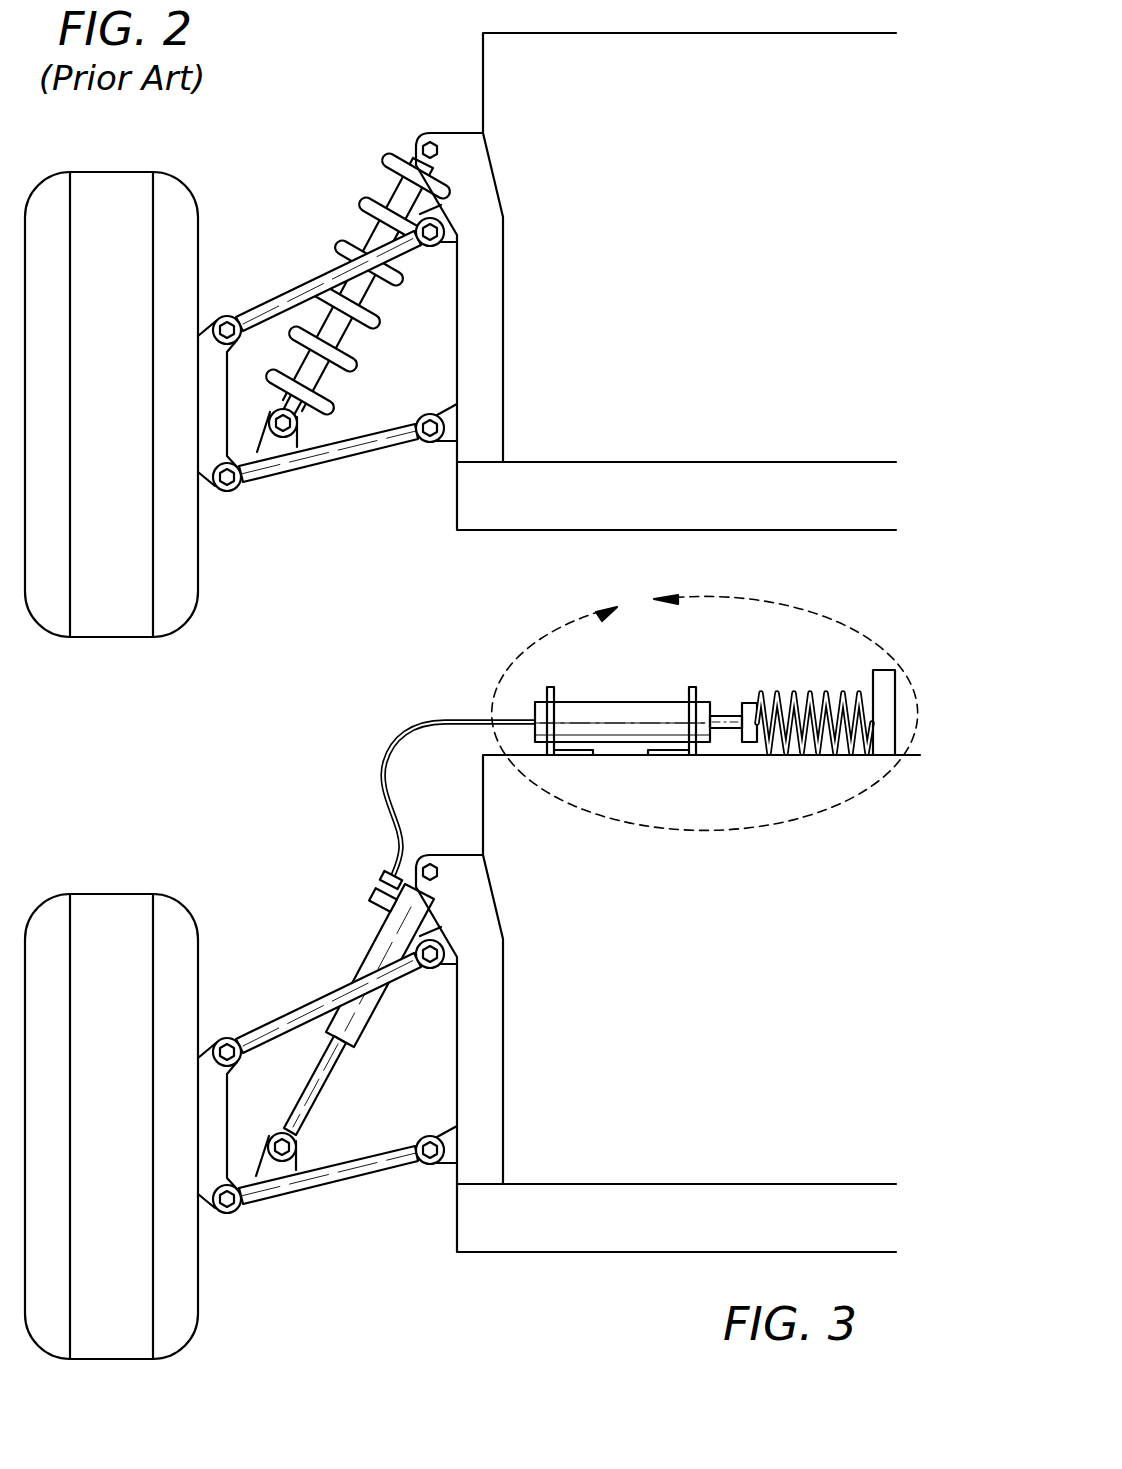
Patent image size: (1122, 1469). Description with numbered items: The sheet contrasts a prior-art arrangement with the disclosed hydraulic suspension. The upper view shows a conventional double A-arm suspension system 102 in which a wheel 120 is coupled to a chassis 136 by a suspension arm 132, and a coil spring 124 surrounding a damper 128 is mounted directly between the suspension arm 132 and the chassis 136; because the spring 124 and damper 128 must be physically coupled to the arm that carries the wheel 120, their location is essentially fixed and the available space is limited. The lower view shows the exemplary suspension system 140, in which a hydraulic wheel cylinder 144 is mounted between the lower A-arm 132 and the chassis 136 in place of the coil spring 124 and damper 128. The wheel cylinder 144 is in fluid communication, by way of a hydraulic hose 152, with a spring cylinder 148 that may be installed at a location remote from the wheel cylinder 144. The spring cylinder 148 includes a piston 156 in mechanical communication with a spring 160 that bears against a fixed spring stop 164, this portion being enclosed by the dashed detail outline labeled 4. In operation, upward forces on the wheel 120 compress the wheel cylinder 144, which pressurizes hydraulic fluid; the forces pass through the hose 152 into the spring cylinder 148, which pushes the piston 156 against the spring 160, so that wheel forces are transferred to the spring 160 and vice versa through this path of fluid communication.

In FIG. 2, the conventional double A-arm suspension system 102 is at (340, 152).
In FIG. 2, the wheel 120 is at (108, 603).
In FIG. 3, the wheel 120 is at (105, 927).
In FIG. 2, the coil spring 124 is at (357, 207).
In FIG. 2, the damper 128 is at (345, 345).
In FIG. 2, the suspension arm 132 is at (288, 290).
In FIG. 3, the suspension arm 132 is at (288, 1012).
In FIG. 2, the chassis 136 is at (500, 535).
In FIG. 3, the chassis 136 is at (500, 1257).
In FIG. 3, the suspension system 140 is at (300, 856).
In FIG. 3, the hydraulic wheel cylinder 144 is at (372, 1013).
In FIG. 3, the spring cylinder 148 is at (615, 700).
In FIG. 3, the hydraulic hose 152 is at (378, 758).
In FIG. 3, the piston 156 is at (728, 715).
In FIG. 3, the spring 160 is at (808, 697).
In FIG. 3, the spring stop 164 is at (880, 670).
In FIG. 3, the detail region of FIG. 4 is at (705, 710).